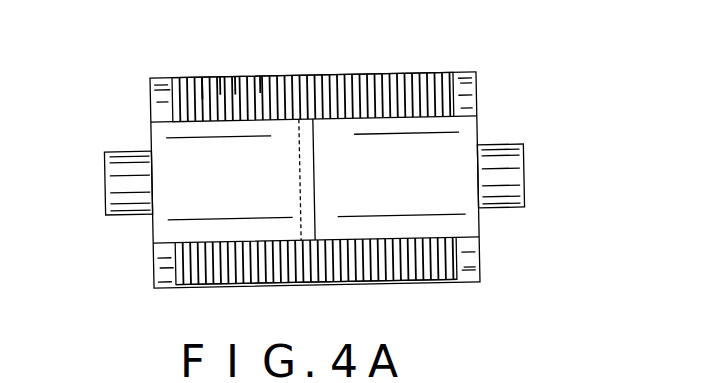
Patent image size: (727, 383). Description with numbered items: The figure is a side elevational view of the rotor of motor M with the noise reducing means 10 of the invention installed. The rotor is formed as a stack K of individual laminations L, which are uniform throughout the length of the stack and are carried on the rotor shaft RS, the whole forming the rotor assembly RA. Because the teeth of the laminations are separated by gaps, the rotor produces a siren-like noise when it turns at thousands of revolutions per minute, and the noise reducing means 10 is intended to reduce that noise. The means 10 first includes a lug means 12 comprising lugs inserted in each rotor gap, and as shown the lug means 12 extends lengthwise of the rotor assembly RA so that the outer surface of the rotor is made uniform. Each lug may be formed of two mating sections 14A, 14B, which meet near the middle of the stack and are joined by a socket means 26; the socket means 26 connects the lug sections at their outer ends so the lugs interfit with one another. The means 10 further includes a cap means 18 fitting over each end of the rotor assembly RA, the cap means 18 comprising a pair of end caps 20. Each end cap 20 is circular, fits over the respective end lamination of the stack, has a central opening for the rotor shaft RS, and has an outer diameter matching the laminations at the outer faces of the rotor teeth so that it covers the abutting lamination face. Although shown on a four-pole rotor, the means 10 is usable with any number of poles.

The noise reducing means 10 is at (140, 251).
The lug means 12 is at (383, 256).
The lug section 14A is at (245, 184).
The lug section 14B is at (405, 184).
The cap means 18 is at (140, 127).
The end cap 20 is at (462, 107).
The socket means 26 is at (313, 238).
The stack K is at (318, 48).
The laminations L is at (263, 90).
The motor M is at (489, 46).
The rotor assembly RA is at (272, 300).
The rotor shaft RS is at (524, 176).